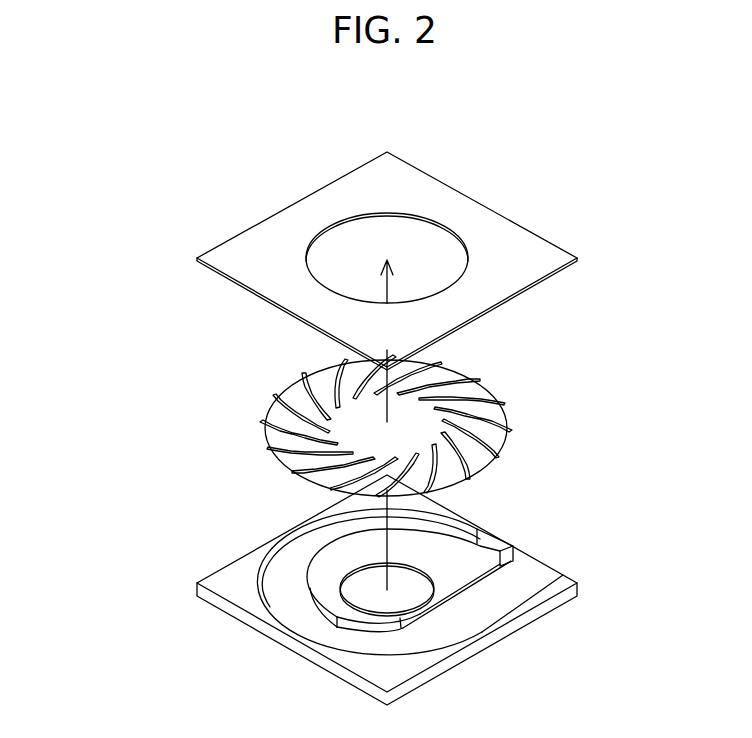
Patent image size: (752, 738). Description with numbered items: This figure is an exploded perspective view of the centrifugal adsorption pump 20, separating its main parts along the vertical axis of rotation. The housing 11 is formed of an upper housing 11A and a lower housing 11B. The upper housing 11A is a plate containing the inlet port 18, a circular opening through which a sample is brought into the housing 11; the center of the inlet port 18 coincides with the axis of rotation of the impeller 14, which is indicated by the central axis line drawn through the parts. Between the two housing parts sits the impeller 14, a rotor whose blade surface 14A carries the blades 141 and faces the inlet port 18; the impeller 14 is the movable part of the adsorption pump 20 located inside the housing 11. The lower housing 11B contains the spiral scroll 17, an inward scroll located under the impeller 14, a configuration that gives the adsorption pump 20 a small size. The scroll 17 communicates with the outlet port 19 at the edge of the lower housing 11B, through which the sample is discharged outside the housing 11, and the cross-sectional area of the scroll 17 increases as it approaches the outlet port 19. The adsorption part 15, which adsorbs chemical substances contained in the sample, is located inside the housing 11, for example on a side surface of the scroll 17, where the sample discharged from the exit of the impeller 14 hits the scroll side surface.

The adsorption pump 20 is at (515, 135).
The housing 11 is at (98, 302).
The upper housing 11A is at (260, 275).
The lower housing 11B is at (232, 584).
The inlet port 18 is at (353, 240).
The impeller 14 is at (652, 408).
The blades 141 is at (505, 417).
The blade surface 14A is at (480, 452).
The adsorption part 15 is at (273, 557).
The scroll 17 is at (323, 633).
The outlet port 19 is at (525, 580).